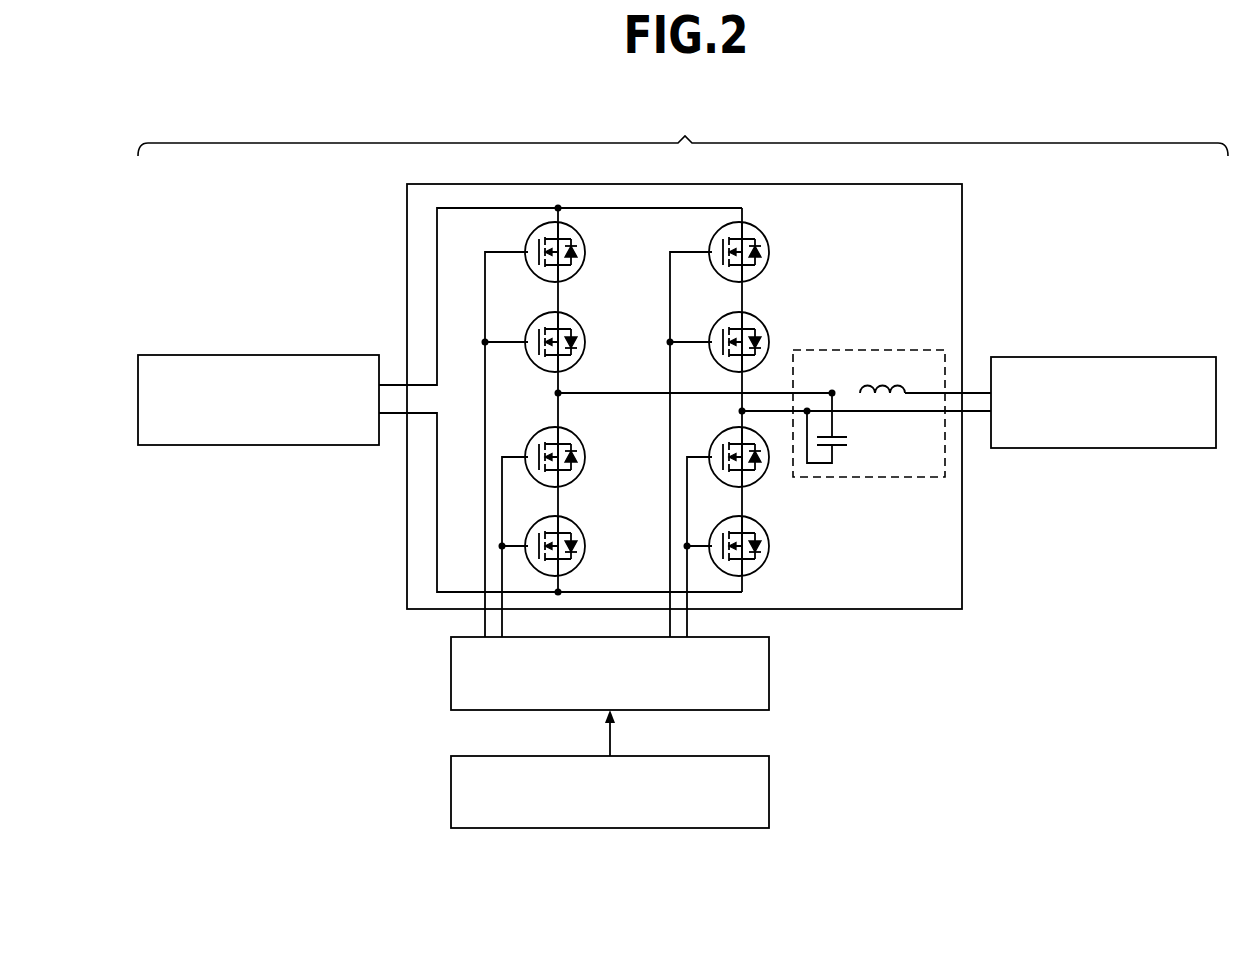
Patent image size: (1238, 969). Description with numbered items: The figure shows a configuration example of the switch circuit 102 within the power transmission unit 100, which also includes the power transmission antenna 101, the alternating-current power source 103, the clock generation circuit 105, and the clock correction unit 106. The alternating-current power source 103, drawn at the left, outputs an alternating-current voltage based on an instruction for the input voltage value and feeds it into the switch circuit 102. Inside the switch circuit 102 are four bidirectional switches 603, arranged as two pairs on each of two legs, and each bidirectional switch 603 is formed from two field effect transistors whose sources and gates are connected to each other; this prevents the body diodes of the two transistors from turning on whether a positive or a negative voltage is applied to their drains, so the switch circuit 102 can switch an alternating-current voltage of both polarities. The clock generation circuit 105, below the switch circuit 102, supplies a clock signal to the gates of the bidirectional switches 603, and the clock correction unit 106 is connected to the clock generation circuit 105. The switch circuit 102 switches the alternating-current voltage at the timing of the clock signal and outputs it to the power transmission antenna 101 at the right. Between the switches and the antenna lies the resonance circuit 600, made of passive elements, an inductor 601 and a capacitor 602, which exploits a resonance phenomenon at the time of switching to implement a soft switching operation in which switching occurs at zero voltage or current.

The power transmission unit 100 is at (683, 128).
The power transmission antenna 101 is at (1105, 357).
The switch circuit 102 is at (407, 241).
The alternating-current power source 103 is at (258, 355).
The clock generation circuit 105 is at (451, 670).
The clock correction unit 106 is at (451, 789).
The resonance circuit 600 is at (869, 424).
The inductor 601 is at (882, 385).
The capacitor 602 is at (848, 441).
The bidirectional switch 603 is at (585, 222).